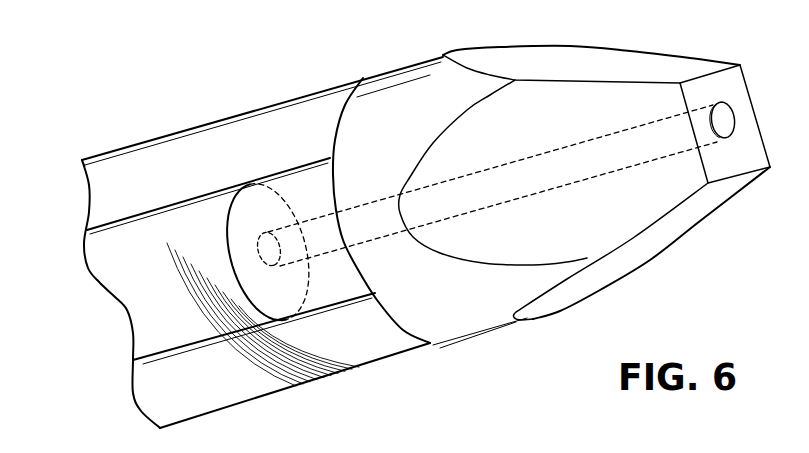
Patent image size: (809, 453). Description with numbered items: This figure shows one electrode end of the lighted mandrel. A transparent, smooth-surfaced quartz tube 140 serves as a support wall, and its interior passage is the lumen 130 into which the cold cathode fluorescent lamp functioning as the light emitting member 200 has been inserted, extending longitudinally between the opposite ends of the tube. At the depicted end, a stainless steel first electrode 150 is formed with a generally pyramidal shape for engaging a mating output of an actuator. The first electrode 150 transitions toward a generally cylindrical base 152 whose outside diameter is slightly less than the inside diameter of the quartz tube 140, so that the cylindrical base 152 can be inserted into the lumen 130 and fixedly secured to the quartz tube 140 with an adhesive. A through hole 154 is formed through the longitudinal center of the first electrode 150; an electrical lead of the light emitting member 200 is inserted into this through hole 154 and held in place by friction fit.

The lumen 130 is at (128, 285).
The quartz tube 140 is at (128, 141).
The first electrode 150 is at (500, 46).
The cylindrical base 152 is at (310, 165).
The through hole 154 is at (606, 133).
The light emitting member 200 is at (220, 192).